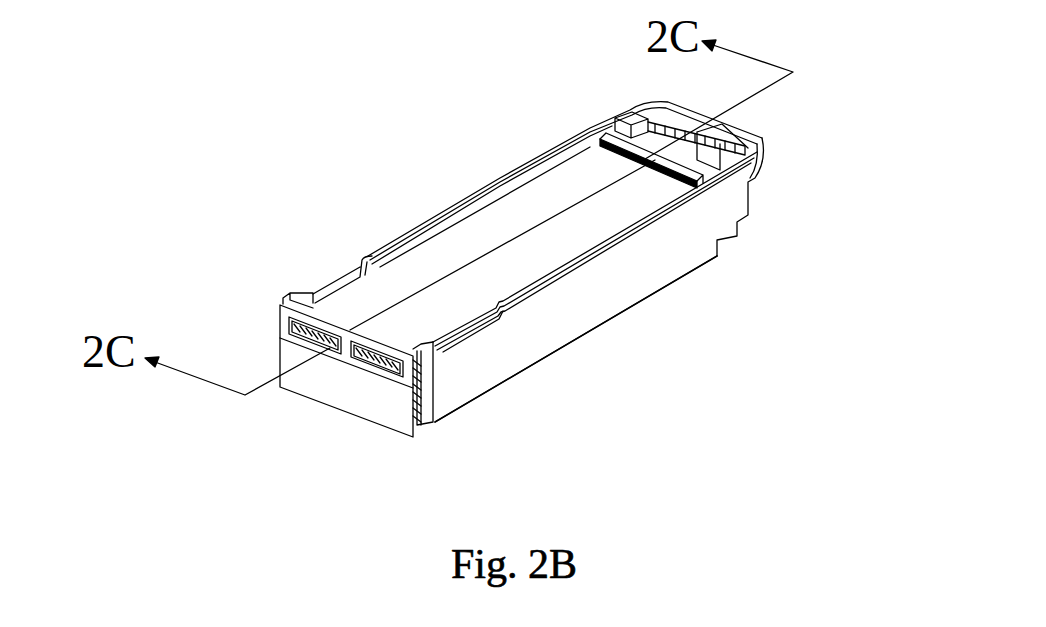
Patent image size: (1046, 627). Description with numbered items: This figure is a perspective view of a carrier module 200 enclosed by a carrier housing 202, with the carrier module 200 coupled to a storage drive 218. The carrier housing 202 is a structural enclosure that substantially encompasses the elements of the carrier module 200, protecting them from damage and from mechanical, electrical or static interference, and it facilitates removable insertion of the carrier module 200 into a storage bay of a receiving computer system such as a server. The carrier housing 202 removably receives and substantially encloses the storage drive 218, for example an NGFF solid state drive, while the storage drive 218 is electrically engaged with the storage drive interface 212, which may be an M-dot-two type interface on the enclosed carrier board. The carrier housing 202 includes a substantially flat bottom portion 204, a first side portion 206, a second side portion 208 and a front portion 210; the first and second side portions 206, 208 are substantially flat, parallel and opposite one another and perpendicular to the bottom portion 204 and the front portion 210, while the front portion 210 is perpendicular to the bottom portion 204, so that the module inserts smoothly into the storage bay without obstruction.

The carrier module 200 is at (507, 278).
The carrier housing 202 is at (527, 278).
The bottom portion 204 is at (562, 343).
The first side portion 206 is at (608, 295).
The second side portion 208 is at (437, 227).
The front portion 210 is at (310, 375).
The storage drive interface 212 is at (758, 140).
The storage drive 218 is at (587, 168).